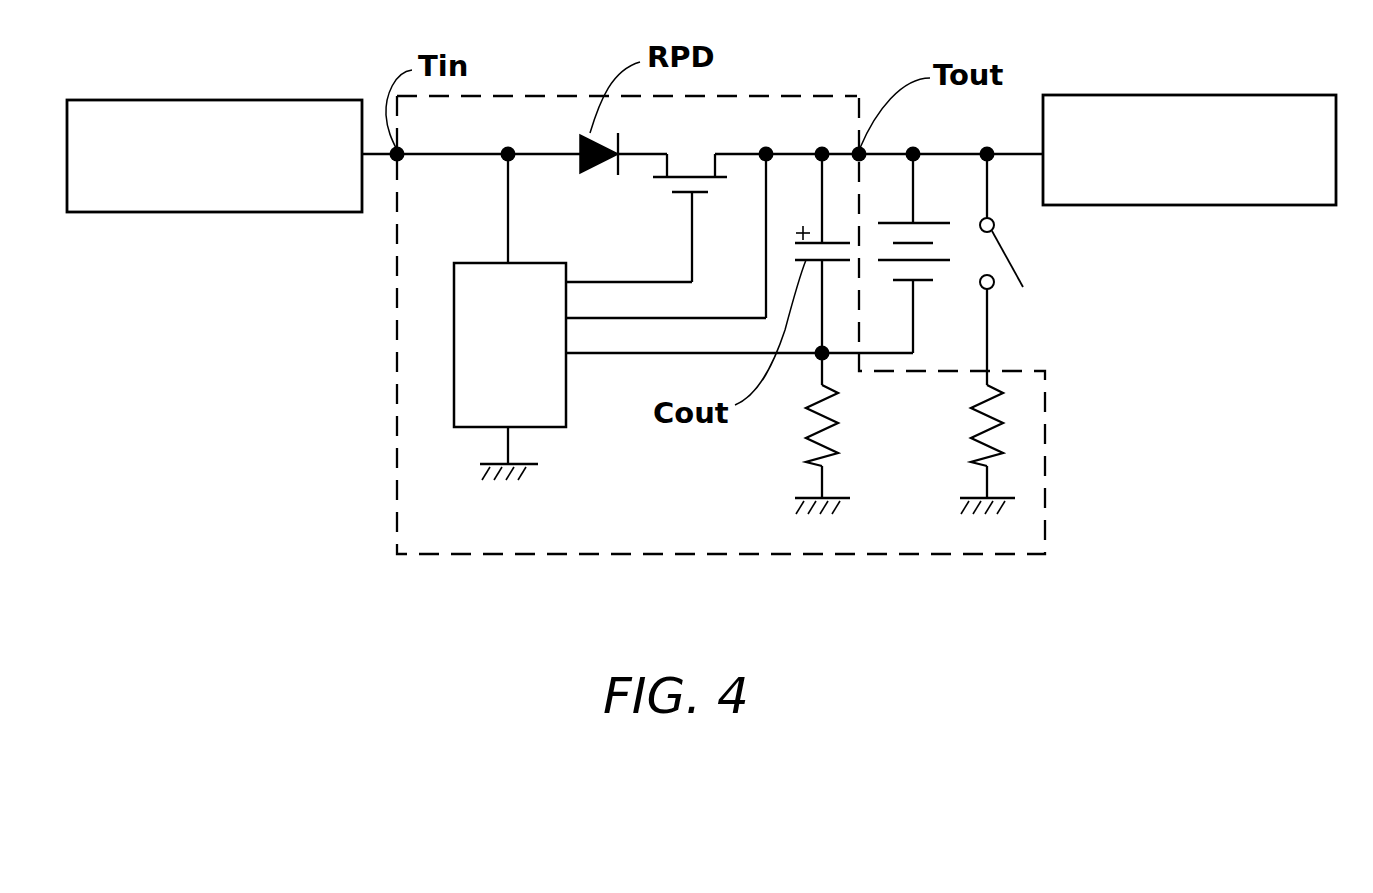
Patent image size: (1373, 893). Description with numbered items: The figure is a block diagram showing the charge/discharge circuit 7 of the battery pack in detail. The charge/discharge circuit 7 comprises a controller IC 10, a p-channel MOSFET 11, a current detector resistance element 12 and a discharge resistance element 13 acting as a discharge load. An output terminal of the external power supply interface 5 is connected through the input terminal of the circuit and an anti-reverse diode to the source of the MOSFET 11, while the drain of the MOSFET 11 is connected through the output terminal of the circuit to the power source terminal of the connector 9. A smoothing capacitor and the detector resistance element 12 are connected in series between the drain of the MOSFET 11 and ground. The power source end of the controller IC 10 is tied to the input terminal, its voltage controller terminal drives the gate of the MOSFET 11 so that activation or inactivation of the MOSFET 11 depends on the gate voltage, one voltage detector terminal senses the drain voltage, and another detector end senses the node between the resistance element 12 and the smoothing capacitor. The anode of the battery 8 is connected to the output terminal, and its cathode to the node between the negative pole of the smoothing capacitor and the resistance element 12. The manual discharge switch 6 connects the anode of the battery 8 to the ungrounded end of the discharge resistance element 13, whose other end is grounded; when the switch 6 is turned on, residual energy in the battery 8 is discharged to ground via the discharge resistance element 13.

The external power supply interface 5 is at (226, 120).
The manual discharge switch 6 is at (1029, 269).
The charge/discharge circuit 7 is at (721, 290).
The battery 8 is at (929, 253).
The connector 9 is at (1202, 115).
The controller IC 10 is at (683, 317).
The MOSFET 11 is at (702, 174).
The current detector resistance element 12 is at (858, 445).
The discharge resistance element 13 is at (1023, 445).